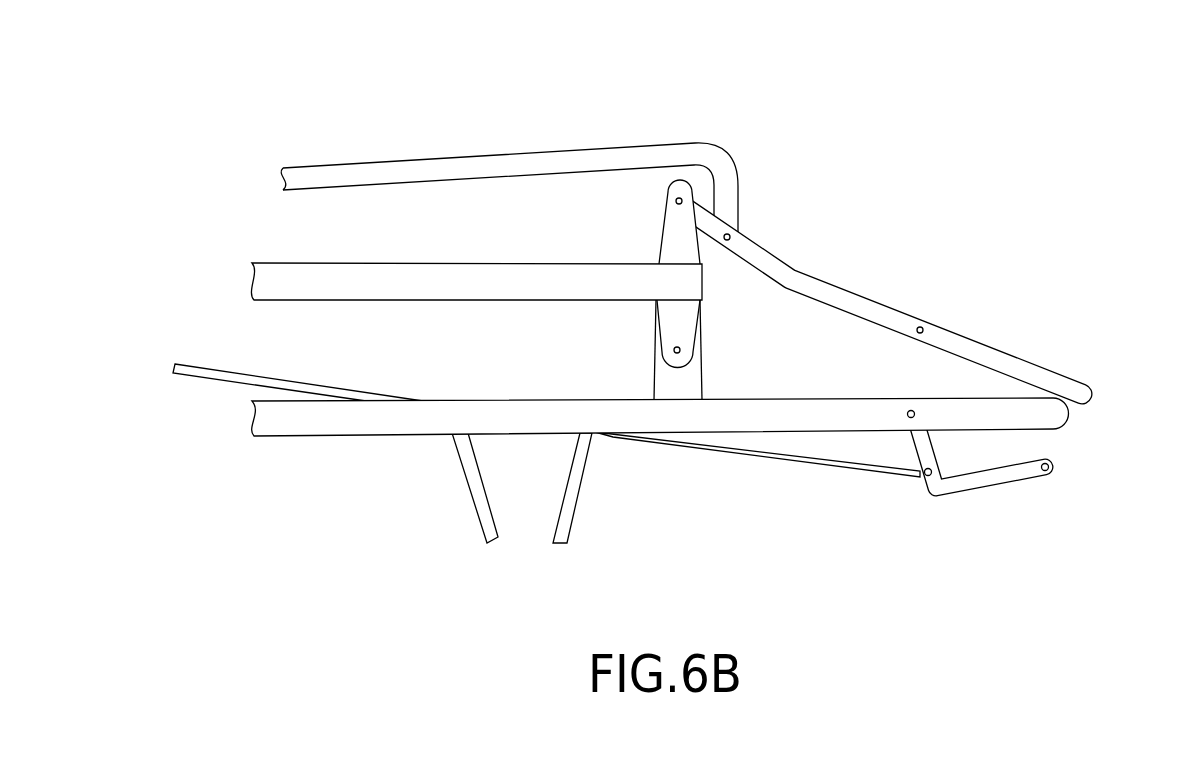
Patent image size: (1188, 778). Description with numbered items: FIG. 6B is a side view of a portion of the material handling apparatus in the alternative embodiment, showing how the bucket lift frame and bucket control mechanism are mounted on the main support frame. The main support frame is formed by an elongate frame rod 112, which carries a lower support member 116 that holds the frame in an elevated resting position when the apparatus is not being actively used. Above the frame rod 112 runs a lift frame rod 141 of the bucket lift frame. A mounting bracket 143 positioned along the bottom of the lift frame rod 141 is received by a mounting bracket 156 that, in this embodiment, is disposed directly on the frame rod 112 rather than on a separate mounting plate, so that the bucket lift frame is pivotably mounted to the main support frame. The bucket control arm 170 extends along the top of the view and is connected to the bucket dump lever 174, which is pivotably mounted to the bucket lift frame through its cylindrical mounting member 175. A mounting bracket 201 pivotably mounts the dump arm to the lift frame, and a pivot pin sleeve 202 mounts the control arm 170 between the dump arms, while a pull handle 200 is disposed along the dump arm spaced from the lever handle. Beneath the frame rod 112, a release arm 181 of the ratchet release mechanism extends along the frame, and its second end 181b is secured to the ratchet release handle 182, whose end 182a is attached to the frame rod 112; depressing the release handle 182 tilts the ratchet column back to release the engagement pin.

The frame rod 112 is at (770, 413).
The lower support member 116 is at (466, 492).
The lift frame rod 141 is at (325, 284).
The mounting bracket 143 is at (660, 322).
The mounting bracket 156 is at (665, 373).
The bucket control arm 170 is at (437, 171).
The bucket dump lever 174 is at (856, 300).
The cylindrical mounting member 175 is at (1090, 392).
The release arm 181 is at (687, 440).
The second end of release arm 181b is at (924, 478).
The ratchet release handle 182 is at (1050, 466).
The end of ratchet release handle 182a is at (1022, 483).
The pull handle 200 is at (931, 323).
The mounting bracket 201 is at (660, 228).
The pivot pin sleeve 202 is at (742, 240).